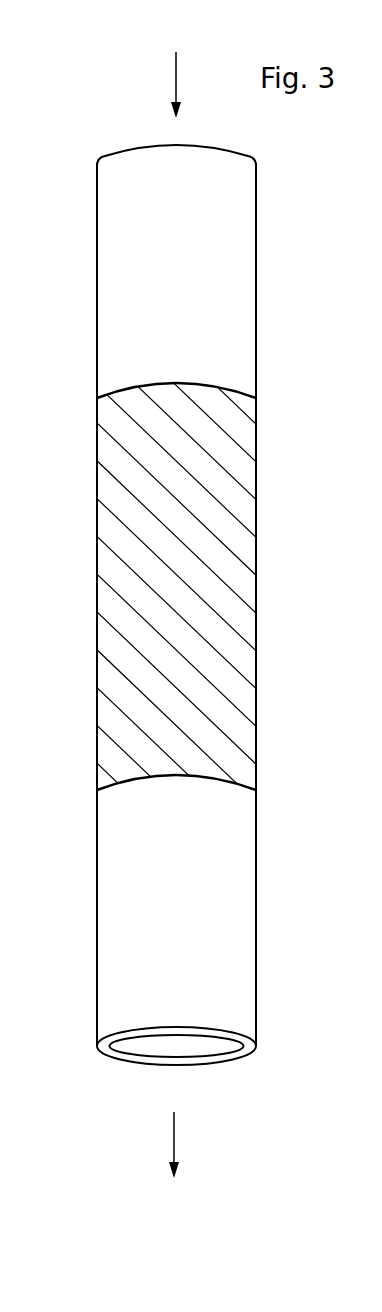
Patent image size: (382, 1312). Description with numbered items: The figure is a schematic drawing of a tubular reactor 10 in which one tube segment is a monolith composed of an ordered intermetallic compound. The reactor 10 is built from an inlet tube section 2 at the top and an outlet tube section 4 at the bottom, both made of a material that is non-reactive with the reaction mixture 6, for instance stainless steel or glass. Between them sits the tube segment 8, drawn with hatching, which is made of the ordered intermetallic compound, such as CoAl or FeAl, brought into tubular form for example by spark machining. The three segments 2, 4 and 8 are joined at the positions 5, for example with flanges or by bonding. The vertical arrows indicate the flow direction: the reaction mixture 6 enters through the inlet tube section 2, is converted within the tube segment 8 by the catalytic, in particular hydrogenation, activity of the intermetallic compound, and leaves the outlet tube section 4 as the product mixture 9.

The inlet tube section 2 is at (137, 287).
The outlet tube section 4 is at (135, 898).
The connection positions 5 is at (114, 389).
The reaction mixture 6 is at (176, 69).
The tube segment 8 is at (137, 597).
The product mixture 9 is at (174, 1163).
The tubular reactor 10 is at (300, 234).